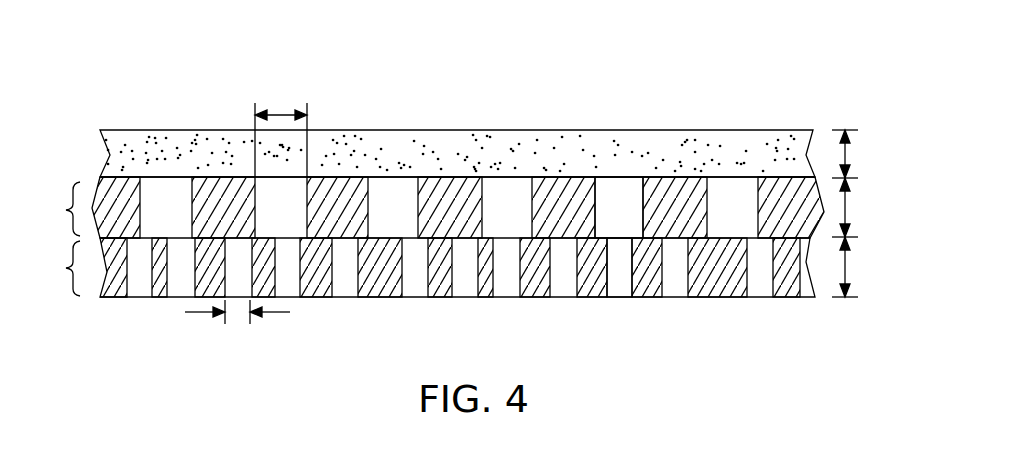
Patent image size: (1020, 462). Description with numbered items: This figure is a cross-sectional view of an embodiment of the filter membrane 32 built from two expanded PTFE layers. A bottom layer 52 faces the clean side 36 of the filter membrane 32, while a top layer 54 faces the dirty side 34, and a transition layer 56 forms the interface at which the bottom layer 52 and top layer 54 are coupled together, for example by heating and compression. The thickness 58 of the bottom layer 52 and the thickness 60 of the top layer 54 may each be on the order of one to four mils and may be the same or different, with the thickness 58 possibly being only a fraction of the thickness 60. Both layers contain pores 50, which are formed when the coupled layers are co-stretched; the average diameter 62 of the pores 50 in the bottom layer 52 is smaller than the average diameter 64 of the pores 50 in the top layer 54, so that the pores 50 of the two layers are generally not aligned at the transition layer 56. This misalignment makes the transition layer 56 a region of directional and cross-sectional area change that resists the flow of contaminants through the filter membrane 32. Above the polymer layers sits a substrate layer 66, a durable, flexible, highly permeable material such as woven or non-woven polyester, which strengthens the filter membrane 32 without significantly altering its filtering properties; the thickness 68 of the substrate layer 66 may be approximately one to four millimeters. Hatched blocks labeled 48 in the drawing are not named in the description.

The filter membrane 32 is at (600, 34).
The dirty side 34 is at (160, 92).
The clean side 36 is at (143, 372).
The conductive segments 48 is at (440, 190).
The pores 50 is at (620, 186).
The bottom layer 52 is at (70, 268).
The top layer 54 is at (70, 211).
The transition layer 56 is at (90, 239).
The thickness of the bottom layer 58 is at (850, 262).
The thickness of the top layer 60 is at (850, 216).
The average diameter of the pores in the bottom layer 62 is at (290, 312).
The average diameter of the pores in the top layer 64 is at (287, 113).
The substrate layer 66 is at (124, 140).
The thickness of the substrate layer 68 is at (850, 152).